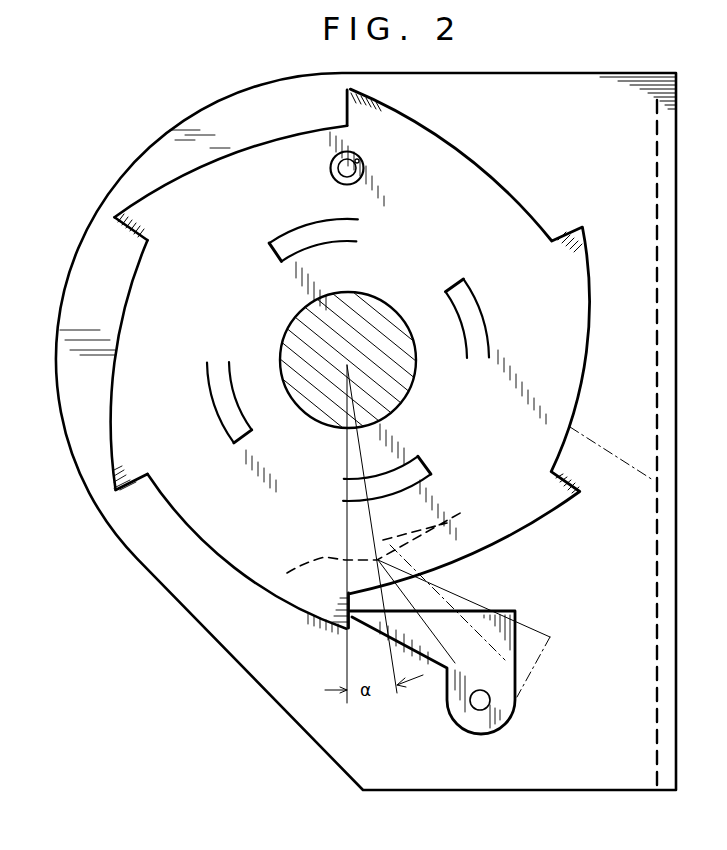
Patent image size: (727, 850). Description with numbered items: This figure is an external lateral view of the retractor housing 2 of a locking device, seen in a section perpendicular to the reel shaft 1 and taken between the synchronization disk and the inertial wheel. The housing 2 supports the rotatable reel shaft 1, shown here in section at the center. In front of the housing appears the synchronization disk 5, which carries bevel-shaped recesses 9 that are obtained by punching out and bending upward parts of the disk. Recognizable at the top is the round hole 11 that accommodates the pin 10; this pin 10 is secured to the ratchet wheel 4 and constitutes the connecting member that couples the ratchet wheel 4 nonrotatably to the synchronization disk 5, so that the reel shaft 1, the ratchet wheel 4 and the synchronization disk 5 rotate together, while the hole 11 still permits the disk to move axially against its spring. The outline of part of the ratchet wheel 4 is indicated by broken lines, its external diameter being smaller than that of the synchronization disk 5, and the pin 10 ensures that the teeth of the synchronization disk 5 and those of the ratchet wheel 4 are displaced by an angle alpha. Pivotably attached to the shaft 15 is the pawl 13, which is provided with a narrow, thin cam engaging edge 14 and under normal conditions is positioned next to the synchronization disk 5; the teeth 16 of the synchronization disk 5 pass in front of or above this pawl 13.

The reel shaft 1 is at (362, 312).
The housing 2 is at (147, 160).
The ratchet wheel 4 is at (409, 604).
The synchronization disk 5 is at (467, 167).
The bevel-shaped recesses 9 is at (228, 406).
The pin 10 is at (346, 168).
The hole 11 is at (358, 160).
The pawl 13 is at (507, 660).
The cam engaging edge 14 is at (354, 620).
The shaft 15 is at (490, 700).
The teeth 16 is at (128, 487).